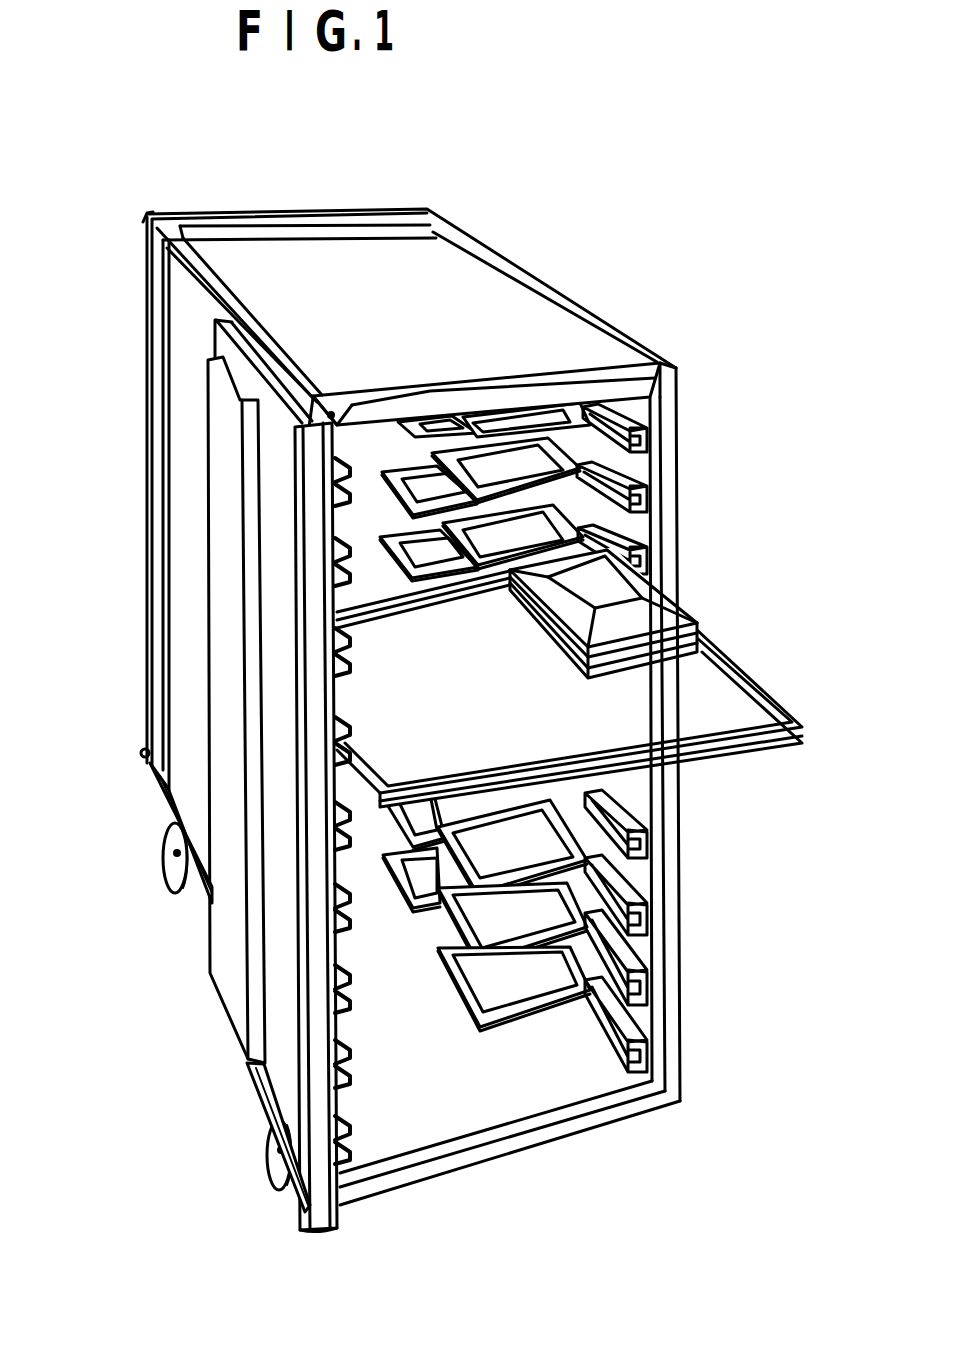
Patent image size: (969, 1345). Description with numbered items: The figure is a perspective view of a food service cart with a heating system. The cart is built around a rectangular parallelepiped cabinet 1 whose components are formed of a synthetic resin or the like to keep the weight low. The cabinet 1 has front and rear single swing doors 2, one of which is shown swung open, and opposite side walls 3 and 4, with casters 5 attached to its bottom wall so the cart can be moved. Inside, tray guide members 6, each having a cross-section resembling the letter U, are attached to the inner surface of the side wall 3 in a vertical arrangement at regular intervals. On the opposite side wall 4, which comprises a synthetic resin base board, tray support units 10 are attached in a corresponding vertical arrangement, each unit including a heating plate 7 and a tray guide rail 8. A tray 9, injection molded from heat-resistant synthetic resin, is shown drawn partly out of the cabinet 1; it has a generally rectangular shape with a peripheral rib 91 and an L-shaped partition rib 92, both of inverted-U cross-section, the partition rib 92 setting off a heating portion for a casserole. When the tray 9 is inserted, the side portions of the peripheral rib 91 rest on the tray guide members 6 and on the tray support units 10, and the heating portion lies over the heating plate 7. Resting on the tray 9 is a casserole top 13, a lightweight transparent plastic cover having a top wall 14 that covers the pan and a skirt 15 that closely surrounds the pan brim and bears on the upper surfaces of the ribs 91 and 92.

The cabinet 1 is at (134, 432).
The single swing door 2 is at (323, 212).
The side wall 3 is at (180, 325).
The side wall 4 is at (635, 540).
The caster 5 is at (170, 867).
The tray guide member 6 is at (343, 1040).
The heating plate 7 is at (537, 915).
The tray guide rail 8 is at (627, 965).
The tray 9 is at (727, 718).
The tray support unit 10 is at (742, 886).
The top 13 is at (750, 546).
The top wall 14 is at (650, 593).
The skirt 15 is at (677, 630).
The peripheral rib 91 is at (765, 687).
The partition rib 92 is at (697, 670).